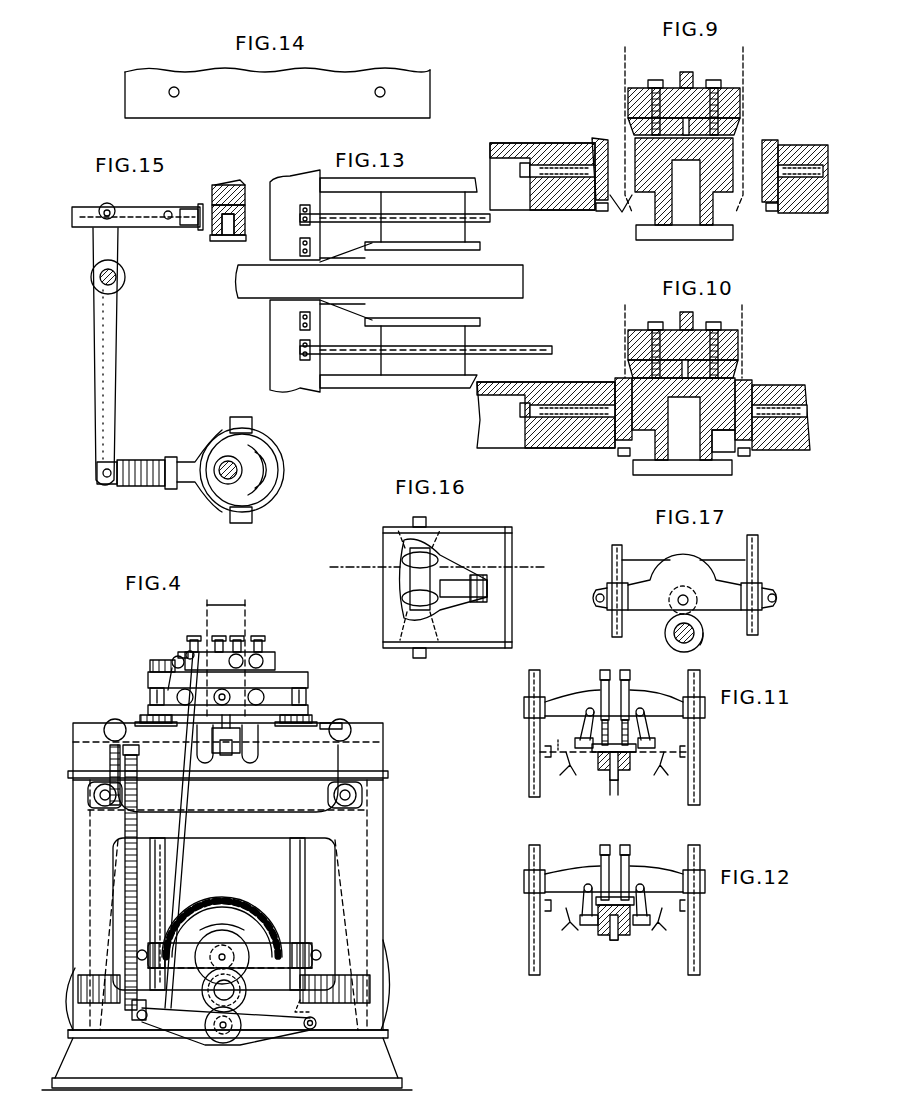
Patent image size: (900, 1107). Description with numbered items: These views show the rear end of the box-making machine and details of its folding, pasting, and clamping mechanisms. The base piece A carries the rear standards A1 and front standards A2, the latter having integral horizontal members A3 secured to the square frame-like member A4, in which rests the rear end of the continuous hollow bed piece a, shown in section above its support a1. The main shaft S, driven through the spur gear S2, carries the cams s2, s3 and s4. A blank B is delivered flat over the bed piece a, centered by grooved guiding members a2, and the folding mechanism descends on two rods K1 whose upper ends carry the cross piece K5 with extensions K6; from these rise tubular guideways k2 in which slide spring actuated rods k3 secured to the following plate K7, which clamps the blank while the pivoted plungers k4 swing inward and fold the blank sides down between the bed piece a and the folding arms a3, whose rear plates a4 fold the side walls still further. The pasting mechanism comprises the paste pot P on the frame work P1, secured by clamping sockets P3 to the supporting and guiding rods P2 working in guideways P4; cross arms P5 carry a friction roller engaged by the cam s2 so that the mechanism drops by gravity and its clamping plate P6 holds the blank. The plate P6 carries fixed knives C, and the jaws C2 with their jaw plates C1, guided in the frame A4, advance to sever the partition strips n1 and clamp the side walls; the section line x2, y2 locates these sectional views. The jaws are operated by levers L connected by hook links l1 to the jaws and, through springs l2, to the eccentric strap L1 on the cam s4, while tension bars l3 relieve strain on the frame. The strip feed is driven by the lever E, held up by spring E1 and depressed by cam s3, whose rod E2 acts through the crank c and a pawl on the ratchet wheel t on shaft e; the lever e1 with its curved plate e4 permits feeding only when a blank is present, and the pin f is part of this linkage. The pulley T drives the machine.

In FIG. 14, the fixed knives C is at (382, 70).
In FIG. 15, the fixed knives C is at (218, 196).
In FIG. 9, the fixed knives C is at (676, 90).
In FIG. 10, the fixed knives C is at (668, 332).
In FIG. 4, the fixed knives C is at (220, 752).
In FIG. 15, the jaw plates C1 is at (190, 228).
In FIG. 9, the jaw plates C1 is at (600, 138).
In FIG. 10, the jaw plates C1 is at (618, 380).
In FIG. 16, the jaw plates C1 is at (508, 628).
In FIG. 4, the jaw plates C1 is at (182, 652).
In FIG. 15, the jaws C2 is at (100, 205).
In FIG. 9, the jaws C2 is at (556, 143).
In FIG. 10, the jaws C2 is at (566, 448).
In FIG. 16, the jaws C2 is at (440, 648).
In FIG. 4, the jaws C2 is at (104, 726).
In FIG. 15, the bed piece a is at (240, 212).
In FIG. 13, the bed piece a is at (380, 281).
In FIG. 9, the bed piece a is at (722, 195).
In FIG. 10, the bed piece a is at (683, 419).
In FIG. 11, the bed piece a is at (628, 762).
In FIG. 12, the bed piece a is at (620, 926).
In FIG. 4, the bed piece a is at (226, 761).
In FIG. 15, the base plate a1 is at (226, 241).
In FIG. 9, the base plate a1 is at (718, 240).
In FIG. 10, the base plate a1 is at (728, 475).
In FIG. 13, the guiding members a2 is at (480, 224).
In FIG. 11, the guiding members a2 is at (540, 752).
In FIG. 12, the guiding members a2 is at (540, 906).
In FIG. 13, the folding arms a3 is at (482, 248).
In FIG. 11, the folding arms a3 is at (566, 755).
In FIG. 12, the folding arms a3 is at (566, 915).
In FIG. 13, the plates a4 is at (340, 258).
In FIG. 4, the base piece A is at (227, 935).
In FIG. 4, the standards A1 is at (88, 810).
In FIG. 4, the standards A2 is at (335, 870).
In FIG. 13, the horizontal members A3 is at (425, 178).
In FIG. 13, the frame-like member A4 is at (270, 358).
In FIG. 4, the frame-like member A4 is at (384, 752).
In FIG. 9, the blank B is at (620, 214).
In FIG. 10, the blank B is at (723, 441).
In FIG. 11, the blank B is at (557, 737).
In FIG. 12, the blank B is at (655, 918).
In FIG. 9, the partition strips n1 is at (624, 90).
In FIG. 10, the partition strips n1 is at (622, 338).
In FIG. 4, the partition strips n1 is at (226, 659).
In FIG. 4, the paste pot P is at (268, 654).
In FIG. 4, the frame work P1 is at (312, 718).
In FIG. 17, the supporting and guiding rods P2 is at (683, 561).
In FIG. 4, the supporting and guiding rods P2 is at (290, 905).
In FIG. 4, the clamping sockets P3 is at (150, 692).
In FIG. 4, the guideways P4 is at (140, 718).
In FIG. 17, the cross arms P5 is at (720, 606).
In FIG. 4, the cross arms P5 is at (188, 952).
In FIG. 15, the clamping plate P6 is at (236, 195).
In FIG. 9, the clamping plate P6 is at (700, 92).
In FIG. 10, the clamping plate P6 is at (740, 340).
In FIG. 4, the clamping plate P6 is at (345, 724).
In FIG. 15, the levers L is at (116, 362).
In FIG. 16, the levers L is at (405, 612).
In FIG. 4, the levers L is at (70, 972).
In FIG. 15, the eccentric strap L1 is at (215, 438).
In FIG. 4, the eccentric strap L1 is at (320, 1000).
In FIG. 15, the hook links l1 is at (145, 228).
In FIG. 16, the hook links l1 is at (456, 598).
In FIG. 15, the springs l2 is at (135, 488).
In FIG. 4, the springs l2 is at (330, 975).
In FIG. 4, the tension bars l3 is at (228, 778).
In FIG. 15, the shaft S is at (228, 478).
In FIG. 17, the shaft S is at (674, 632).
In FIG. 4, the shaft S is at (226, 1000).
In FIG. 17, the cam s2 is at (702, 643).
In FIG. 4, the cam s3 is at (208, 985).
In FIG. 15, the cam s4 is at (262, 455).
In FIG. 4, the spur gear S2 is at (232, 929).
In FIG. 11, the rods K1 is at (688, 790).
In FIG. 12, the rods K1 is at (688, 955).
In FIG. 4, the rods K1 is at (290, 848).
In FIG. 11, the cross piece K5 is at (568, 702).
In FIG. 12, the cross piece K5 is at (568, 876).
In FIG. 11, the extensions K6 is at (640, 708).
In FIG. 12, the extensions K6 is at (642, 884).
In FIG. 11, the following plate K7 is at (600, 760).
In FIG. 12, the following plate K7 is at (614, 935).
In FIG. 11, the tubular guideways k2 is at (622, 672).
In FIG. 12, the tubular guideways k2 is at (610, 850).
In FIG. 11, the spring actuated rods k3 is at (620, 793).
In FIG. 11, the plungers k4 is at (656, 744).
In FIG. 12, the plungers k4 is at (594, 926).
In FIG. 16, the section line x2 is at (363, 567).
In FIG. 16, the section line y2 is at (502, 567).
In FIG. 4, the lever E is at (235, 1025).
In FIG. 4, the spring E1 is at (125, 870).
In FIG. 4, the rod E2 is at (165, 880).
In FIG. 4, the pulley T is at (78, 988).
In FIG. 4, the ratchet wheel t is at (150, 666).
In FIG. 4, the shaft e is at (172, 660).
In FIG. 4, the lever e1 is at (262, 700).
In FIG. 4, the curved plate e4 is at (262, 690).
In FIG. 4, the crank c is at (190, 650).
In FIG. 4, the pin f is at (234, 752).